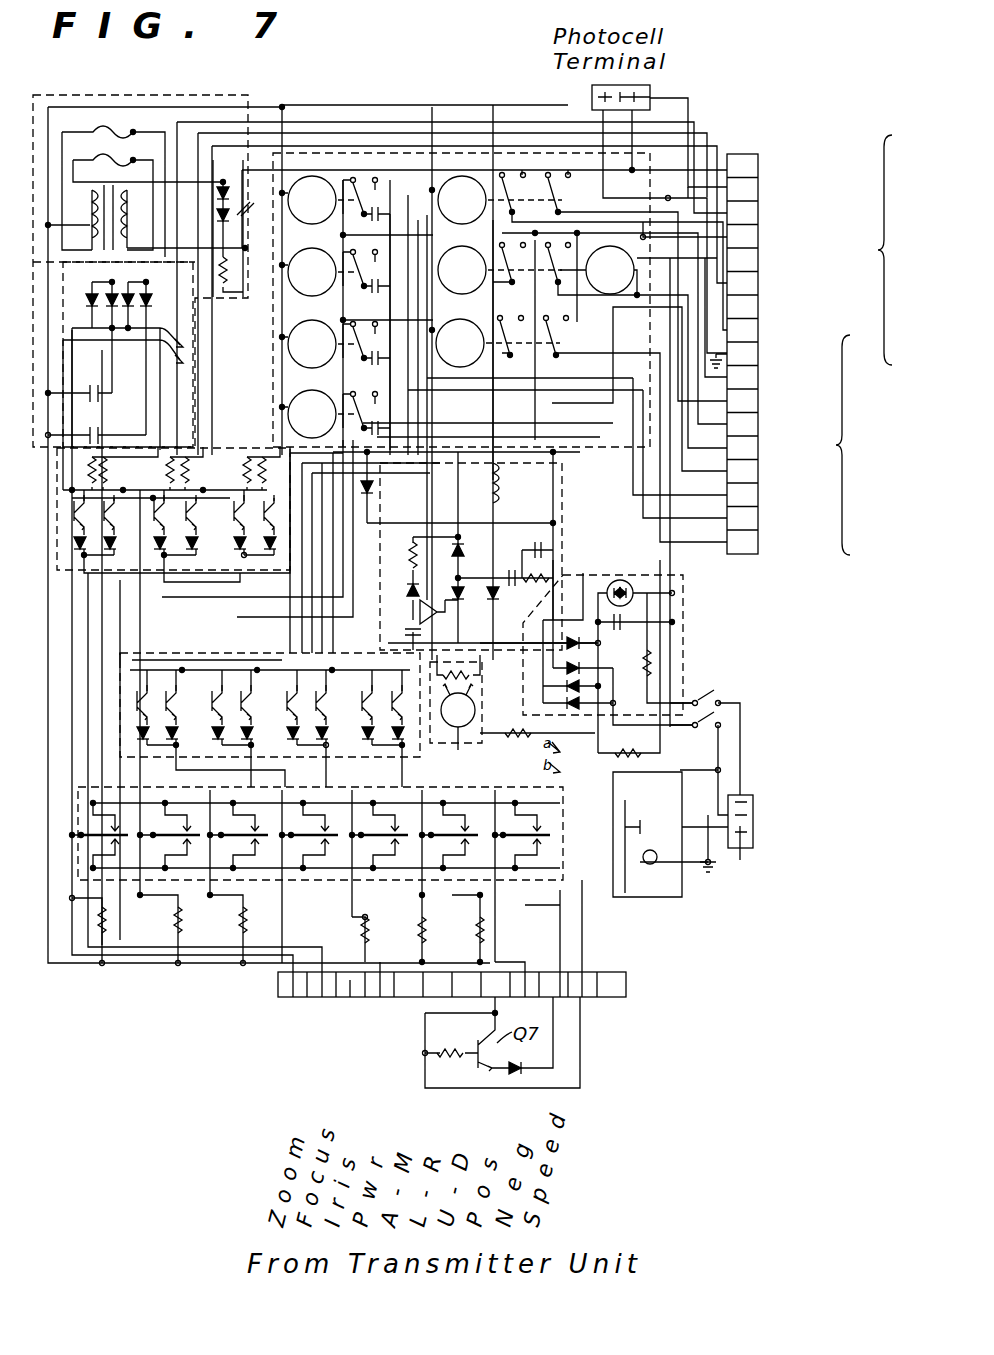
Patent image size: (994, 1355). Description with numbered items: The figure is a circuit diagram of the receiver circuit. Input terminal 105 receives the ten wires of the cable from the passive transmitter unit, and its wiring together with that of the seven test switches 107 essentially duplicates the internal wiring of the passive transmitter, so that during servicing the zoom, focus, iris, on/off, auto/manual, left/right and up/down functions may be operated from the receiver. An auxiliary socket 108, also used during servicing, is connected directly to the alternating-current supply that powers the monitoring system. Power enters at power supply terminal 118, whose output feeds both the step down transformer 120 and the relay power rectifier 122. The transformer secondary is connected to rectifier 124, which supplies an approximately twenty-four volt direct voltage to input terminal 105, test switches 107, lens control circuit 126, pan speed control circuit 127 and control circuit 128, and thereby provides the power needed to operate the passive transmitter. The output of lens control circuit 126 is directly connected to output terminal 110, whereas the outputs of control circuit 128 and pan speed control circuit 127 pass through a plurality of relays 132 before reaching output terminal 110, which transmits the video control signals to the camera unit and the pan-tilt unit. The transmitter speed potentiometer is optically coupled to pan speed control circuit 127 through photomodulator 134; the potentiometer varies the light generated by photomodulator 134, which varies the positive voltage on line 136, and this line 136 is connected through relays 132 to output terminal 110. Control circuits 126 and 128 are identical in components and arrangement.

The input terminal 105 is at (626, 985).
The test switches 107 is at (75, 825).
The auxiliary socket 108 is at (670, 897).
The output terminal 110 is at (740, 152).
The power supply terminal 118 is at (745, 850).
The step down transformer 120 is at (95, 95).
The relay power rectifier 122 is at (688, 625).
The rectifier 124 is at (30, 420).
The lens control circuit 126 is at (55, 538).
The pan speed control circuit 127 is at (525, 467).
The control circuit 128 is at (185, 660).
The relays 132 is at (400, 150).
The photomodulator 134 is at (456, 702).
The line 136 is at (465, 382).